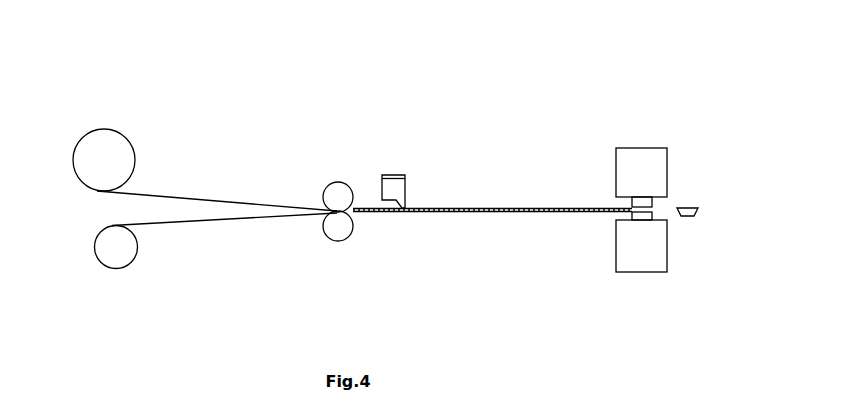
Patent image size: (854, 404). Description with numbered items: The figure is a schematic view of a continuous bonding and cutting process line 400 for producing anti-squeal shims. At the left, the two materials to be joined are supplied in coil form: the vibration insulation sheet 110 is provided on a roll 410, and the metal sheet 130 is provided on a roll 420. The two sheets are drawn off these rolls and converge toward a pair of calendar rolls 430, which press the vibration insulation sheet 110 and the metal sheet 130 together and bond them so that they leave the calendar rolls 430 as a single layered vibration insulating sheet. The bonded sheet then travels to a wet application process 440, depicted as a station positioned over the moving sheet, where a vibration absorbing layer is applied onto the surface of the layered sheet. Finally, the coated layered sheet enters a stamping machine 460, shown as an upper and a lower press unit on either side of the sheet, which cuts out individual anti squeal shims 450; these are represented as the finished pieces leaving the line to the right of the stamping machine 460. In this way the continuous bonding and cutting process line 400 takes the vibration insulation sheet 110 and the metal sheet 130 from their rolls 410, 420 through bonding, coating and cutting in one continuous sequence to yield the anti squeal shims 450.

The continuous bonding and cutting process line 400 is at (228, 105).
The coil or roll 410 is at (88, 146).
The coil or roll 420 is at (117, 257).
The pair of calendar rolls 430 is at (340, 178).
The wet application process 440 is at (400, 168).
The anti squeal shims 450 is at (692, 202).
The stamping machine 460 is at (645, 138).
The vibration insulation sheet 110 is at (183, 232).
The metal sheet 130 is at (178, 190).